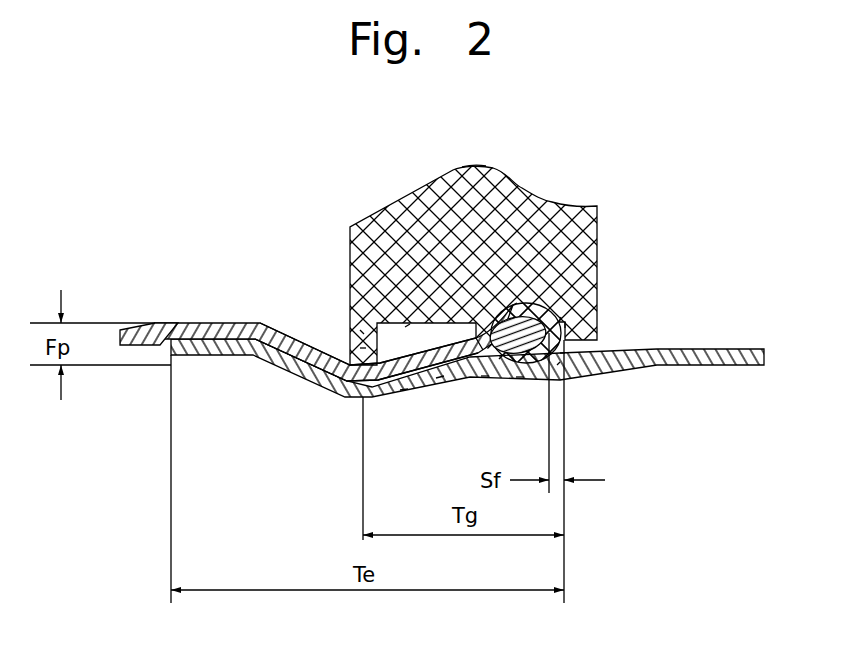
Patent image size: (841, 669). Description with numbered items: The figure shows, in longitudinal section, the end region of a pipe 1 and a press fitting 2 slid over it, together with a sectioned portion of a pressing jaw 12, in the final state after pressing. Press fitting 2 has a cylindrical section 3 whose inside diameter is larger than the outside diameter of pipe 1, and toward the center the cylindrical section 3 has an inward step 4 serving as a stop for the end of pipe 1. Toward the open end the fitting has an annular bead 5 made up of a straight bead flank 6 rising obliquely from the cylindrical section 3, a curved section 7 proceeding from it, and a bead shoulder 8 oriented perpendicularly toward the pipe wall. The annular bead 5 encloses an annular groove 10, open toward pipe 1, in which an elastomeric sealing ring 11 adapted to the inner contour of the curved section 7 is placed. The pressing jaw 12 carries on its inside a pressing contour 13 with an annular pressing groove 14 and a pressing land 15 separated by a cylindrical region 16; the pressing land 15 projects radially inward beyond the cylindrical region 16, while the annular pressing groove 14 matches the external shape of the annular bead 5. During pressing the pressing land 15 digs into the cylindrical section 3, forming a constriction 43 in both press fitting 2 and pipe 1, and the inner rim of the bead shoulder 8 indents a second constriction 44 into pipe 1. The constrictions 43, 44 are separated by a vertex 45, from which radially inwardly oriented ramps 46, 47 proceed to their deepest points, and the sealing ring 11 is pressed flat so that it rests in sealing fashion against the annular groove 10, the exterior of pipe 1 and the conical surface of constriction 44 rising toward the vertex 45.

The pipe 1 is at (740, 349).
The press fitting 2 is at (185, 315).
The cylindrical section 3 is at (230, 323).
The inward step 4 is at (158, 322).
The annular bead 5 is at (568, 323).
The bead flank 6 is at (397, 313).
The curved section 7 is at (560, 317).
The bead shoulder 8 is at (560, 353).
The annular groove 10 is at (483, 350).
The sealing ring 11 is at (560, 323).
The pressing jaw 12 is at (470, 165).
The pressing contour 13 is at (405, 328).
The annular pressing groove 14 is at (517, 303).
The pressing land 15 is at (363, 348).
The cylindrical region 16 is at (362, 333).
The constriction 43 is at (404, 380).
The constriction 44 is at (560, 362).
The vertex 45 is at (485, 380).
The ramp 46 is at (440, 380).
The ramp 47 is at (520, 380).